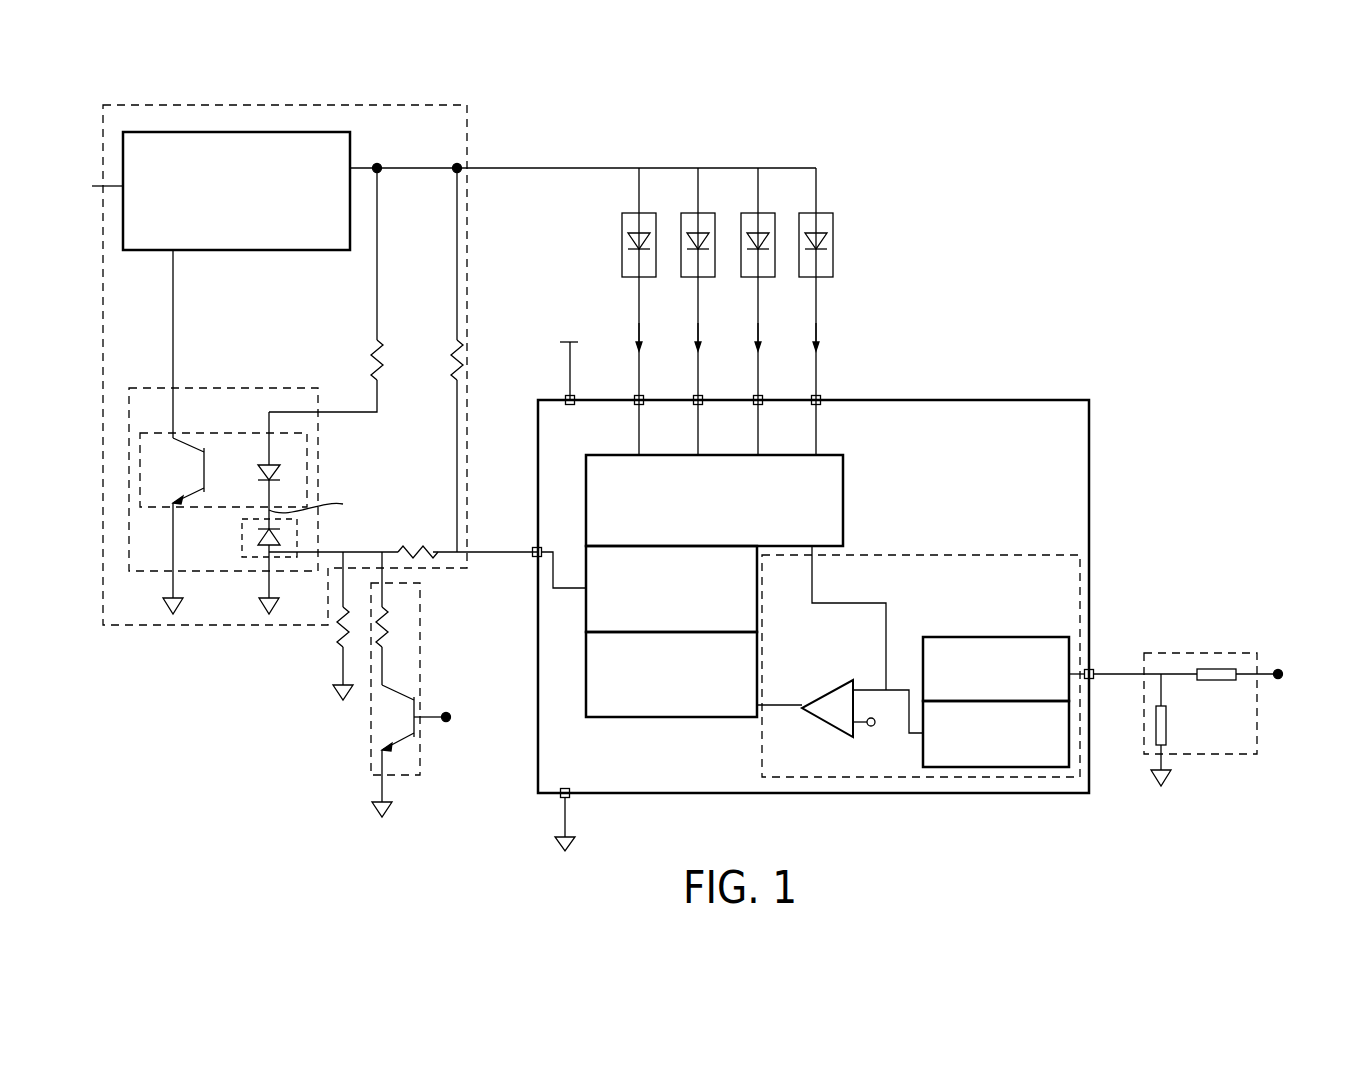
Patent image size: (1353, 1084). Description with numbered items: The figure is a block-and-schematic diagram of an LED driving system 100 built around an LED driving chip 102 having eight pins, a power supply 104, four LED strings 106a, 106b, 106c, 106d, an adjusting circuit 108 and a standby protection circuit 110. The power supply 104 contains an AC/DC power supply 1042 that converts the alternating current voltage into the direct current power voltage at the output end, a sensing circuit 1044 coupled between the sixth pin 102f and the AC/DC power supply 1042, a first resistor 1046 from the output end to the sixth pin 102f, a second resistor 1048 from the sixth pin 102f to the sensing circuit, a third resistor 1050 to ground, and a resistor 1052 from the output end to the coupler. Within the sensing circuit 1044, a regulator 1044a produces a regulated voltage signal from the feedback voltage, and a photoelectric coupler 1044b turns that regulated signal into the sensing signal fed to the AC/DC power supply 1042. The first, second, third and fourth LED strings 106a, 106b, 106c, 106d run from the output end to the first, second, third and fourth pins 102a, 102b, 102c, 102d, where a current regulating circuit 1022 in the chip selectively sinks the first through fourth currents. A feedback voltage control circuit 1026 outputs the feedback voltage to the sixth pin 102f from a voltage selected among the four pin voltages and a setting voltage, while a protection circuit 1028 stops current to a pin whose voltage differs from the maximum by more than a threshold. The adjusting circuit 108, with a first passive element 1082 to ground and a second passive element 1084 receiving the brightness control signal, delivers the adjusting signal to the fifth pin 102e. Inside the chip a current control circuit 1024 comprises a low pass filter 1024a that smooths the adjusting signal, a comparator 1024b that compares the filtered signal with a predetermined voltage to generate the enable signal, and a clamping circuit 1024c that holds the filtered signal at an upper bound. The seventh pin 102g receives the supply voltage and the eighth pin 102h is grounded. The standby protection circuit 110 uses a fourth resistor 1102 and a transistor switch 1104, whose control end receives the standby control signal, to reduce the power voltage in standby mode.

The LED driving system 100 is at (1252, 135).
The LED driving chip 102 is at (1028, 400).
The current regulating circuit 1022 is at (845, 503).
The current control circuit 1024 is at (912, 778).
The low pass filter 1024a is at (1032, 637).
The comparator 1024b is at (838, 676).
The clamping circuit 1024c is at (1030, 768).
The feedback voltage control circuit 1026 is at (586, 607).
The protection circuit 1028 is at (586, 658).
The first pin 102a is at (642, 395).
The second pin 102b is at (701, 395).
The third pin 102c is at (761, 395).
The fourth pin 102d is at (819, 395).
The fifth pin 102e is at (1093, 682).
The sixth pin 102f is at (541, 546).
The seventh pin 102g is at (571, 395).
The eighth pin 102h is at (569, 787).
The power supply 104 is at (467, 137).
The AC/DC power supply 1042 is at (250, 132).
The sensing circuit 1044 is at (230, 388).
The regulator 1044a is at (262, 555).
The photoelectric coupler 1044b is at (318, 453).
The first resistor 1046 is at (467, 340).
The second resistor 1048 is at (410, 547).
The third resistor 1050 is at (343, 625).
The resistor 1052 is at (377, 340).
The first LED string 106a is at (656, 278).
The second LED string 106b is at (715, 278).
The third LED string 106c is at (775, 278).
The fourth LED string 106d is at (833, 278).
The adjusting circuit 108 is at (1160, 652).
The first passive element 1082 is at (1168, 727).
The second passive element 1084 is at (1220, 668).
The standby protection circuit 110 is at (420, 765).
The fourth resistor 1102 is at (395, 625).
The transistor switch 1104 is at (400, 690).